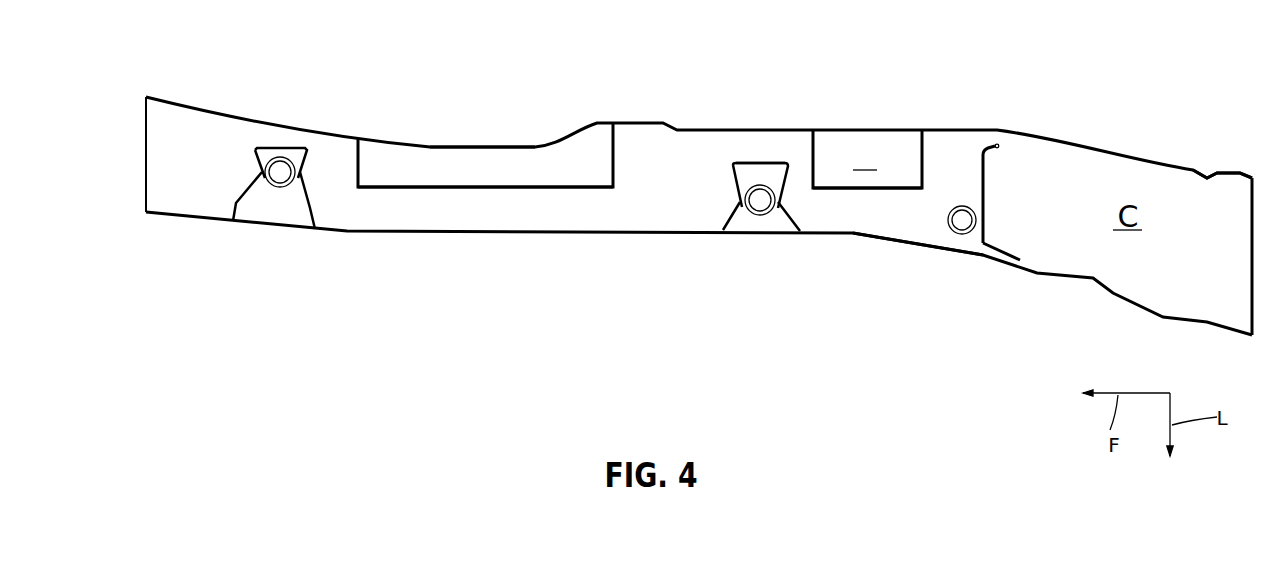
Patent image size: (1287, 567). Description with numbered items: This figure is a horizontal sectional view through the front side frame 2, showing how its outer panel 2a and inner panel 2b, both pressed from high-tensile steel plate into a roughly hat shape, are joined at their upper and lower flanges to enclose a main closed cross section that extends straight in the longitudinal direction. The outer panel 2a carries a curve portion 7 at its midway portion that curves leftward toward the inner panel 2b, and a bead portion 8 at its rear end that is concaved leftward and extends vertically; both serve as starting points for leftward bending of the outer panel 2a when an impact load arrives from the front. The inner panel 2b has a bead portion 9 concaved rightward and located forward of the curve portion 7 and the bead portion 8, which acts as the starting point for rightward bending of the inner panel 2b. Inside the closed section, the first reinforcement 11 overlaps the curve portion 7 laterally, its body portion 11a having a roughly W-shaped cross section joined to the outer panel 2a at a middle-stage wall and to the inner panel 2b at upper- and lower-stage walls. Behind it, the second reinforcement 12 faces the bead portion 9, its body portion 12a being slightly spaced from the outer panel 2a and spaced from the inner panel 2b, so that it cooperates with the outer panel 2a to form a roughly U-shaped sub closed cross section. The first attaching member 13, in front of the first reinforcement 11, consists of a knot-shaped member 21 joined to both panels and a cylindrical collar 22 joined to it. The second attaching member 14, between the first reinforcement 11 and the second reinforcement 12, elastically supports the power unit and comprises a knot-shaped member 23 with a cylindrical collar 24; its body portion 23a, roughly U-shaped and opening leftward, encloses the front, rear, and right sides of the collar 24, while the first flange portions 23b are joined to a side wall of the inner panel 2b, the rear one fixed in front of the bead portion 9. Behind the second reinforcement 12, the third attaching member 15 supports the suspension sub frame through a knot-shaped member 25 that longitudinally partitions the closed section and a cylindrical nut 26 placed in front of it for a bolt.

The front side frame 2 is at (247, 98).
The outer panel 2a is at (632, 126).
The inner panel 2b is at (583, 236).
The curve portion 7 is at (452, 146).
The bead portion 8 is at (1207, 177).
The bead portion 9 is at (852, 236).
The first reinforcement 11 is at (433, 190).
The body portion 11a is at (500, 190).
The second reinforcement 12 is at (910, 197).
The body portion 12a is at (880, 190).
The first attaching member 13 is at (281, 147).
The second attaching member 14 is at (750, 160).
The third attaching member 15 is at (995, 171).
The knot-shaped member 21 is at (242, 190).
The cylindrical collar 22 is at (277, 188).
The knot-shaped member 23 is at (764, 158).
The body portion 23a is at (732, 175).
The first flange portions 23b is at (708, 228).
The cylindrical collar 24 is at (758, 213).
The knot-shaped member 25 is at (987, 233).
The cylindrical nut 26 is at (962, 205).